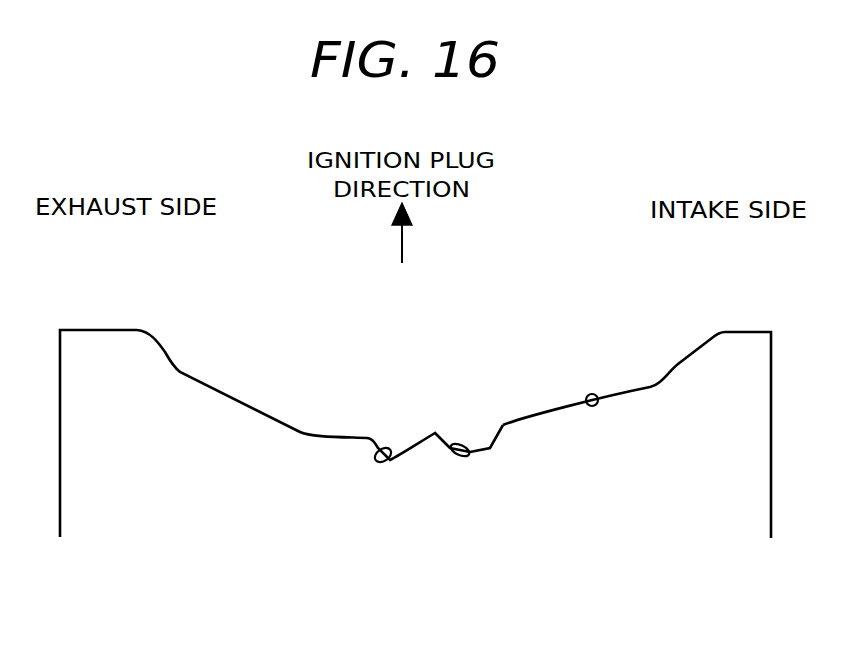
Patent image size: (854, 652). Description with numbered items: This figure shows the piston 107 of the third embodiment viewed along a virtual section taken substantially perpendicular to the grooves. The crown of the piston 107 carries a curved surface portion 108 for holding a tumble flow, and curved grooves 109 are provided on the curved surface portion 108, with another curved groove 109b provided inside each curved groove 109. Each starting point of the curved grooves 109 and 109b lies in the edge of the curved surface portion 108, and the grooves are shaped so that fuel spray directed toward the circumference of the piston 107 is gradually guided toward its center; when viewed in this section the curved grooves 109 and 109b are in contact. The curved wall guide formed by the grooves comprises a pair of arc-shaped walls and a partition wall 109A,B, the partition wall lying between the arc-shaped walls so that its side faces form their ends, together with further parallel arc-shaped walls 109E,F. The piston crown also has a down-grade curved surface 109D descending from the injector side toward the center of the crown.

The piston 107 is at (60, 500).
The curved surface portion 108 is at (228, 393).
The curved groove 109 is at (400, 445).
The curved groove 109b is at (482, 438).
The arc-shaped walls and partition wall 109A,B is at (382, 462).
The down-grade curved surface 109D is at (586, 405).
The arc-shaped walls 109E,F is at (466, 455).